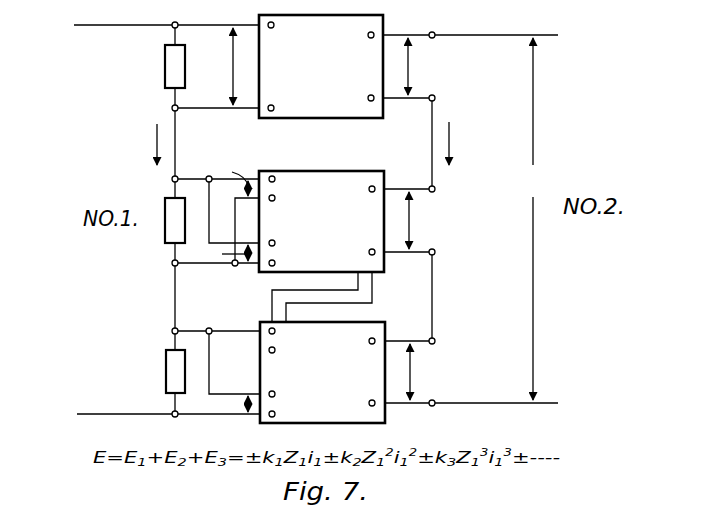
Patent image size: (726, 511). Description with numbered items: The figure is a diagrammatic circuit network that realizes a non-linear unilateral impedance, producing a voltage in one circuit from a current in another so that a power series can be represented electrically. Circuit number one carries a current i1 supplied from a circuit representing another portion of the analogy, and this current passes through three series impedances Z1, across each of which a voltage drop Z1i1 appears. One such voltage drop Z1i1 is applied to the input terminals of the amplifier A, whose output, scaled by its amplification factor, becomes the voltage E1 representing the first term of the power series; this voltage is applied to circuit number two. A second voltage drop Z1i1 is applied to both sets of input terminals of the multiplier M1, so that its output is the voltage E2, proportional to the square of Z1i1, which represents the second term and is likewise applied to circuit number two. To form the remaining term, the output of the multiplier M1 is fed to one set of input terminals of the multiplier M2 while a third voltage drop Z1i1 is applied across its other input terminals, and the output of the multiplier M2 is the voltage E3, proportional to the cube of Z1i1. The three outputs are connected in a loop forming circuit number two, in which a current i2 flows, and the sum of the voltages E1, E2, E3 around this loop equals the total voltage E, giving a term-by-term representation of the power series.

The amplifier A is at (321, 66).
The multiplier M1 is at (321, 221).
The multiplier M2 is at (322, 372).
The impedance Z1 is at (175, 219).
The voltage drop Z1i1 is at (219, 221).
The current i1 is at (147, 144).
The current i2 is at (457, 143).
The voltage E1 is at (451, 66).
The voltage E2 is at (457, 220).
The voltage E3 is at (455, 372).
The total voltage E is at (531, 219).